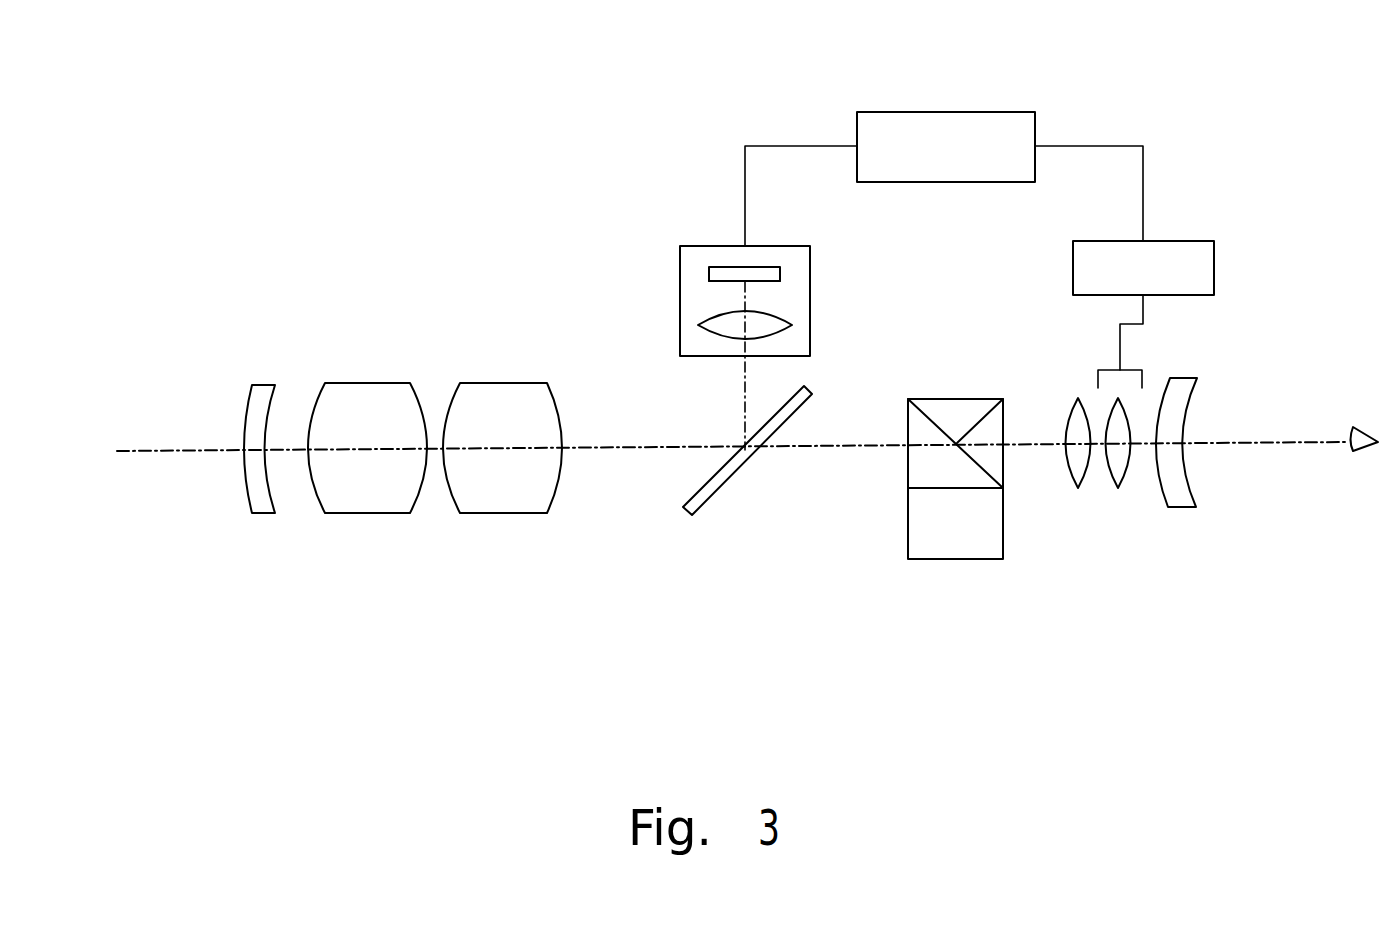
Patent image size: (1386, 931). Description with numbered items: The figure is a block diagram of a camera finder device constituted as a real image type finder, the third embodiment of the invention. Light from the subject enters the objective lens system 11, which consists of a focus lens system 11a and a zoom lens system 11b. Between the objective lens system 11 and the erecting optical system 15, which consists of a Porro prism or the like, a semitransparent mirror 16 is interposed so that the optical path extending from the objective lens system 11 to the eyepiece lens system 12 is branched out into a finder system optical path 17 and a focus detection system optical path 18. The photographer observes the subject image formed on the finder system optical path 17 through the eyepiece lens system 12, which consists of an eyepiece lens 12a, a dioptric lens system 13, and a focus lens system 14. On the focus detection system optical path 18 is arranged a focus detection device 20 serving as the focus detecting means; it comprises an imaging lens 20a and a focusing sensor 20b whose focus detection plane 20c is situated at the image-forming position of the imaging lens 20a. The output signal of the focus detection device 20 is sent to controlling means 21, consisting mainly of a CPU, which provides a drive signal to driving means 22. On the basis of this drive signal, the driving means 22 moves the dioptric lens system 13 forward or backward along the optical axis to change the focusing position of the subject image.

The objective lens system 11 is at (393, 468).
The focus lens system 11a is at (264, 502).
The zoom lens system 11b is at (433, 524).
The eyepiece lens system 12 is at (1189, 460).
The eyepiece lens 12a is at (1187, 380).
The dioptric lens system 13 is at (1115, 468).
The focus lens system 14 is at (1075, 468).
The erecting optical system 15 is at (983, 542).
The semitransparent mirror 16 is at (712, 490).
The finder system optical path 17 is at (835, 447).
The focus detection system optical path 18 is at (745, 403).
The focus detection device 20 is at (745, 260).
The imaging lens 20a is at (773, 320).
The focusing sensor 20b is at (775, 274).
The focus detection plane 20c is at (727, 283).
The controlling means 21 is at (992, 122).
The driving means 22 is at (1176, 241).